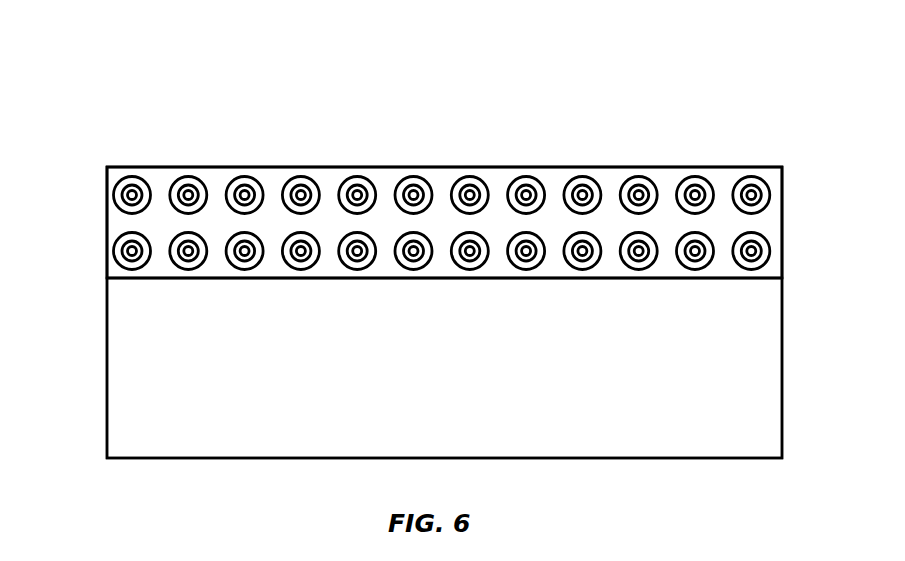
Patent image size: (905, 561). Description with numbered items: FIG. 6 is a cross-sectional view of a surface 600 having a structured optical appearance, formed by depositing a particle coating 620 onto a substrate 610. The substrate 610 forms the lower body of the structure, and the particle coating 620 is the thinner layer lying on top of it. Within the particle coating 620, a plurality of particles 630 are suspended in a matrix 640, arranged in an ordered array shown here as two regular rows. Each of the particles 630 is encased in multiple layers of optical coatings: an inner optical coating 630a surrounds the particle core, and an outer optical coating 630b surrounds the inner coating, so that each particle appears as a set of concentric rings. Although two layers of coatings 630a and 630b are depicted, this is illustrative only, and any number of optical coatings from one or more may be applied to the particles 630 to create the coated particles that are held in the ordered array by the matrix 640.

The surface 600 is at (740, 112).
The substrate 610 is at (783, 372).
The particle coating 620 is at (783, 222).
The particles 630 is at (442, 181).
The optical coating 630a is at (534, 187).
The optical coating 630b is at (478, 179).
The matrix 640 is at (107, 222).